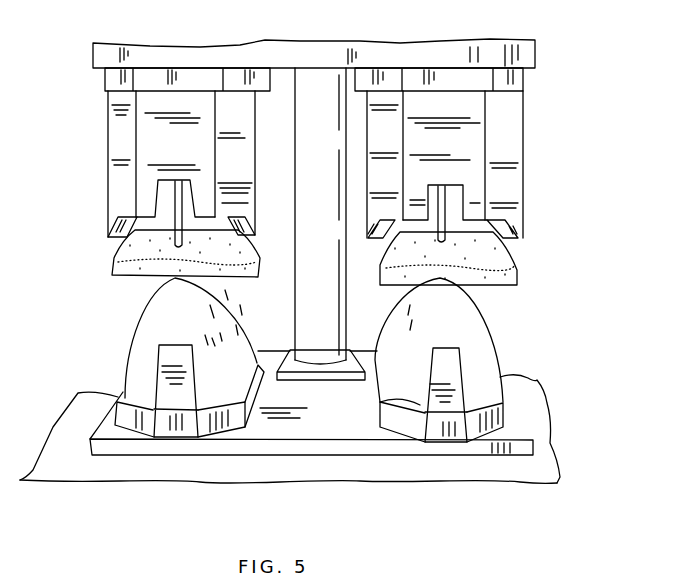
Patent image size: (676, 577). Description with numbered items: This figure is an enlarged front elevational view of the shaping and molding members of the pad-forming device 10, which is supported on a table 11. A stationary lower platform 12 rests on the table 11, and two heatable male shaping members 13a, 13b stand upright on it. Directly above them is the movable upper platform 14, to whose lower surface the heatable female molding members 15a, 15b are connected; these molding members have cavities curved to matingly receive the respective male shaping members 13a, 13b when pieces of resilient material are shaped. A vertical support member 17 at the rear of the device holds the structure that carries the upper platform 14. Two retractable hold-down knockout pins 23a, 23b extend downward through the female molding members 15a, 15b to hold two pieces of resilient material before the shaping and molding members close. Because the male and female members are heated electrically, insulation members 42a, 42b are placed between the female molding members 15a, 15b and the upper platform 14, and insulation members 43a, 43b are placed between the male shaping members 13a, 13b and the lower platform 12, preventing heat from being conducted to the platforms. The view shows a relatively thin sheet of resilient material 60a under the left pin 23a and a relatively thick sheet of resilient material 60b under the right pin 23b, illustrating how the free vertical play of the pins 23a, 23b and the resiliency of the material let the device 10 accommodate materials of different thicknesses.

The pad-forming device 10 is at (187, 38).
The table 11 is at (548, 460).
The stationary lower platform 12 is at (527, 437).
The male shaping member 13a is at (148, 318).
The male shaping member 13b is at (483, 323).
The movable upper platform 14 is at (463, 54).
The female molding member 15a is at (118, 152).
The female molding member 15b is at (523, 130).
The vertical support member 17 is at (303, 305).
The hold-down knockout pin 23a is at (176, 203).
The hold-down knockout pin 23b is at (443, 203).
The insulation member 42a is at (107, 80).
The insulation member 42b is at (518, 78).
The insulation member 43a is at (118, 417).
The insulation member 43b is at (500, 407).
The resilient material 60a is at (110, 263).
The resilient material 60b is at (505, 256).